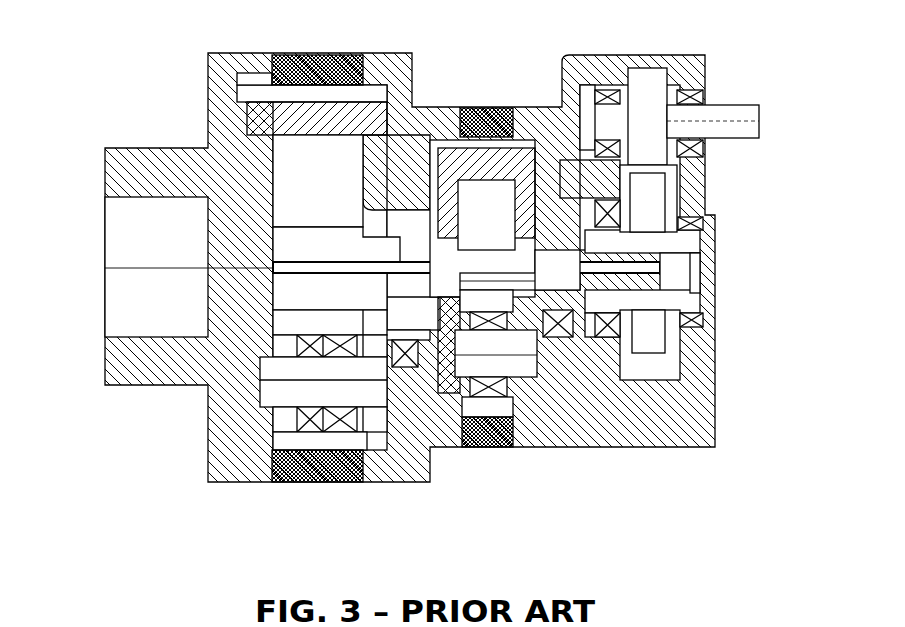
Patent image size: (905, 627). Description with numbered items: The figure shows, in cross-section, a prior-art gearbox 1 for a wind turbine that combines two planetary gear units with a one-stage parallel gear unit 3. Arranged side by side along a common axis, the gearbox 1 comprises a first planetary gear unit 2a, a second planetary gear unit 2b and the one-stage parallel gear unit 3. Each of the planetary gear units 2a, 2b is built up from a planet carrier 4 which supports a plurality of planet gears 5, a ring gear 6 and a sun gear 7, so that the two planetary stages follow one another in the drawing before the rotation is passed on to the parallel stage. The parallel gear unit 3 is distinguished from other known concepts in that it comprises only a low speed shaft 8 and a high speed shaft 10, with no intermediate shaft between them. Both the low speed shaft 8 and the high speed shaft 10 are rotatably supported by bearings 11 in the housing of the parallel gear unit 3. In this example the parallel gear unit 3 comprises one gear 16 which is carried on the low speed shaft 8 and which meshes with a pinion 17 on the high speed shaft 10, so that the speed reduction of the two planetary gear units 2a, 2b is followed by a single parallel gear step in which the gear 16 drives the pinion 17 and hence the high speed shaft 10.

The gearbox 1 is at (122, 56).
The first planetary gear unit 2a is at (318, 497).
The second planetary gear unit 2b is at (487, 465).
The one-stage parallel gear unit 3 is at (632, 465).
The planet carrier 4 is at (160, 372).
The planet gears 5 is at (292, 440).
The ring gear 6 is at (306, 80).
The sun gear 7 is at (290, 250).
The low speed shaft 8 is at (703, 264).
The high speed shaft 10 is at (735, 120).
The bearings 11 is at (603, 92).
The gear 16 is at (652, 218).
The pinion 17 is at (652, 108).